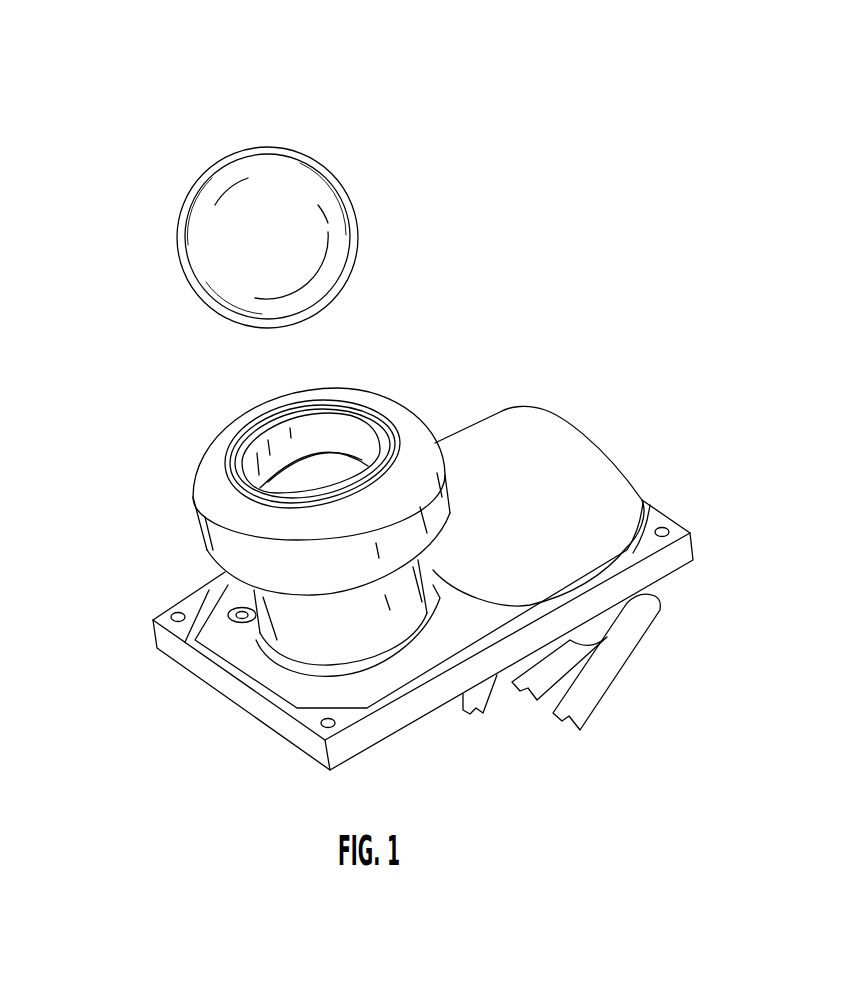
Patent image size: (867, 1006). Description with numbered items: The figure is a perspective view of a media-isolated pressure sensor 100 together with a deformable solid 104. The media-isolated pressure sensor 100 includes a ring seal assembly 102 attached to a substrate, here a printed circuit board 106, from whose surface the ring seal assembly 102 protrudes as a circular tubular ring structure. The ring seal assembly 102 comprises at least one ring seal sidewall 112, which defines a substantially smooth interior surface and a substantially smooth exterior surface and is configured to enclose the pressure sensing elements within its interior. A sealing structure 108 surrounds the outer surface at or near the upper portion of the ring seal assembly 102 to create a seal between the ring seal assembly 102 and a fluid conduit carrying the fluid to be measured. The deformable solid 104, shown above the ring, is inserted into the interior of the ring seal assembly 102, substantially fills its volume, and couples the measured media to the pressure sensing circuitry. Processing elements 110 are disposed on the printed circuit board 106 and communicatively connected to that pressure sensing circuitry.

The media-isolated pressure sensor 100 is at (230, 83).
The ring seal assembly 102 is at (177, 548).
The deformable solid 104 is at (210, 253).
The printed circuit board 106 is at (300, 692).
The sealing structure 108 is at (422, 432).
The processing elements 110 is at (565, 480).
The ring seal sidewall 112 is at (392, 617).